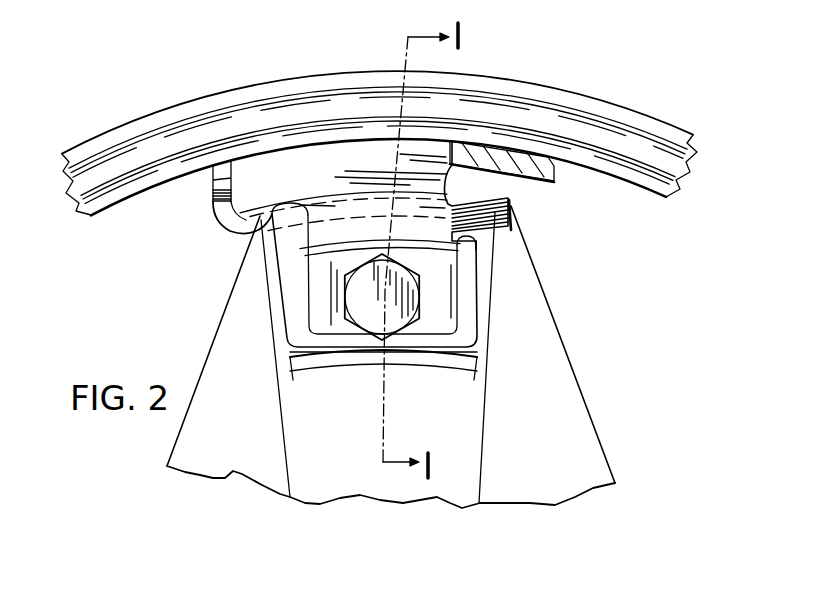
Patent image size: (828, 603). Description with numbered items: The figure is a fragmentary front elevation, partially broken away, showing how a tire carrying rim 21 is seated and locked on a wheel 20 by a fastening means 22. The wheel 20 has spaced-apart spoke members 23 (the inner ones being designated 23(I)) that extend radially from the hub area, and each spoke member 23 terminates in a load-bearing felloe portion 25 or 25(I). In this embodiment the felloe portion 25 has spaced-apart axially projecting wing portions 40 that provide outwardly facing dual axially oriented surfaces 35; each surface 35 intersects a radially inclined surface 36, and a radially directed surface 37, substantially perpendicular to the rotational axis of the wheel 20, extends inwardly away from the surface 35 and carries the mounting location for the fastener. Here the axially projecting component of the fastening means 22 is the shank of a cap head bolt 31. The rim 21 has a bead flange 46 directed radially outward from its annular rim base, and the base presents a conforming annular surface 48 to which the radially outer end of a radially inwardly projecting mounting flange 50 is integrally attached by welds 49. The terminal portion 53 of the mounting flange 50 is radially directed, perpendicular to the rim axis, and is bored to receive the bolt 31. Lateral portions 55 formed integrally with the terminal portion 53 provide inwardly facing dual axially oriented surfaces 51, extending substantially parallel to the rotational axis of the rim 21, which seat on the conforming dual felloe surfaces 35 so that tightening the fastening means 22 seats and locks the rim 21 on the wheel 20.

The wheel 20 is at (614, 398).
The tire carrying rim 21 is at (160, 84).
The fastening means 22 is at (357, 338).
The spoke member 23 is at (453, 496).
The felloe portion 25 is at (233, 239).
The cap head bolt 31 is at (397, 328).
The axially oriented surface 35 is at (511, 228).
The radially inclined surface 36 is at (486, 201).
The radially directed surface 37 is at (280, 258).
The wing portion 40 is at (273, 302).
The bead flange 46 is at (637, 120).
The conforming annular surface 48 is at (512, 152).
The weld 49 is at (560, 178).
The mounting flange 50 is at (317, 166).
The axially oriented surface 51 is at (260, 230).
The terminal portion 53 is at (441, 334).
The lateral portion 55 is at (213, 183).